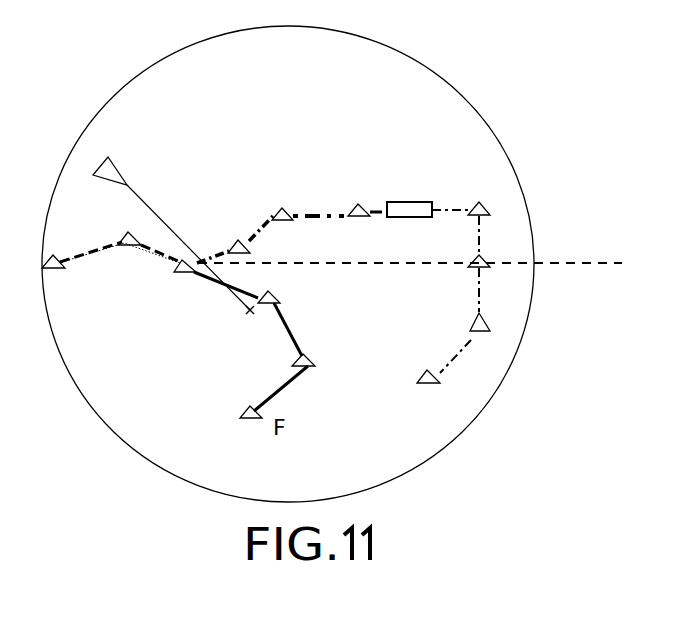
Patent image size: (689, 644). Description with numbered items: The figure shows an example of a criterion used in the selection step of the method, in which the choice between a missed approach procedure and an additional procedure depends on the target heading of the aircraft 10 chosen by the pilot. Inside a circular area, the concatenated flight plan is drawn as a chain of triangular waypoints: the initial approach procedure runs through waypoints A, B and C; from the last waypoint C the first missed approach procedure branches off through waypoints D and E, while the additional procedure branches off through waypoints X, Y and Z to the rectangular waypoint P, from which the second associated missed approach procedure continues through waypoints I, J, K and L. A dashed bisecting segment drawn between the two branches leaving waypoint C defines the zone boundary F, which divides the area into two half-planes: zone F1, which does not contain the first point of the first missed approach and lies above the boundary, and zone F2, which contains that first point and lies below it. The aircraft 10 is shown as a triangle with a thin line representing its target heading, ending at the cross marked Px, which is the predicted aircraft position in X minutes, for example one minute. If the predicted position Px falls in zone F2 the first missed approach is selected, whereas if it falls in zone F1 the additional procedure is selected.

The aircraft 10 is at (119, 170).
The zone boundary F is at (577, 265).
The zone F1 is at (380, 185).
The zone F2 is at (409, 402).
The waypoint P is at (409, 226).
The predicted aircraft position Px is at (241, 327).
The waypoint A is at (59, 279).
The waypoint B is at (129, 228).
The waypoint C is at (185, 284).
The waypoint D is at (284, 307).
The waypoint E is at (317, 369).
The waypoint X is at (231, 239).
The waypoint Y is at (275, 206).
The waypoint Z is at (352, 202).
The waypoint I is at (490, 218).
The waypoint J is at (489, 272).
The waypoint K is at (495, 332).
The waypoint L is at (441, 387).